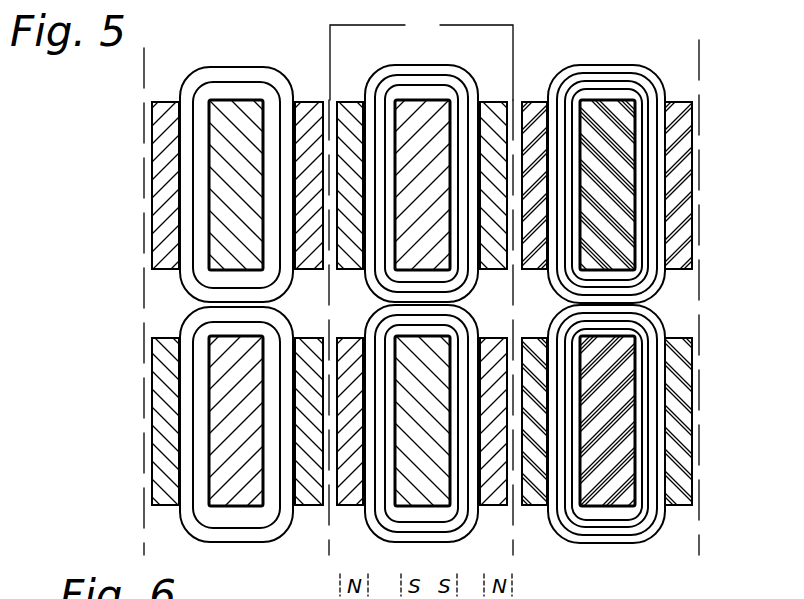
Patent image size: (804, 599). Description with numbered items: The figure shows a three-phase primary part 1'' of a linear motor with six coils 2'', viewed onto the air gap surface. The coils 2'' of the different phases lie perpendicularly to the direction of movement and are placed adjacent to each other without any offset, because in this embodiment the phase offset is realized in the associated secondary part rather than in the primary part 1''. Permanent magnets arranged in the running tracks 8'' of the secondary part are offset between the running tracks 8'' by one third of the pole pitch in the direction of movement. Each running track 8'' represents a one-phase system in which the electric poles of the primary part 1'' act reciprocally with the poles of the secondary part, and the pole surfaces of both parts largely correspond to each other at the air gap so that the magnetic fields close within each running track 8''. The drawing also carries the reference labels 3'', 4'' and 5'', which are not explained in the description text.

The three-phase primary part 1'' is at (368, 184).
The coils 2'' is at (130, 289).
The second stator part 3'' is at (404, 452).
The core 4'' is at (626, 467).
The permanent magnet 5'' is at (711, 468).
The running tracks 8'' is at (421, 52).